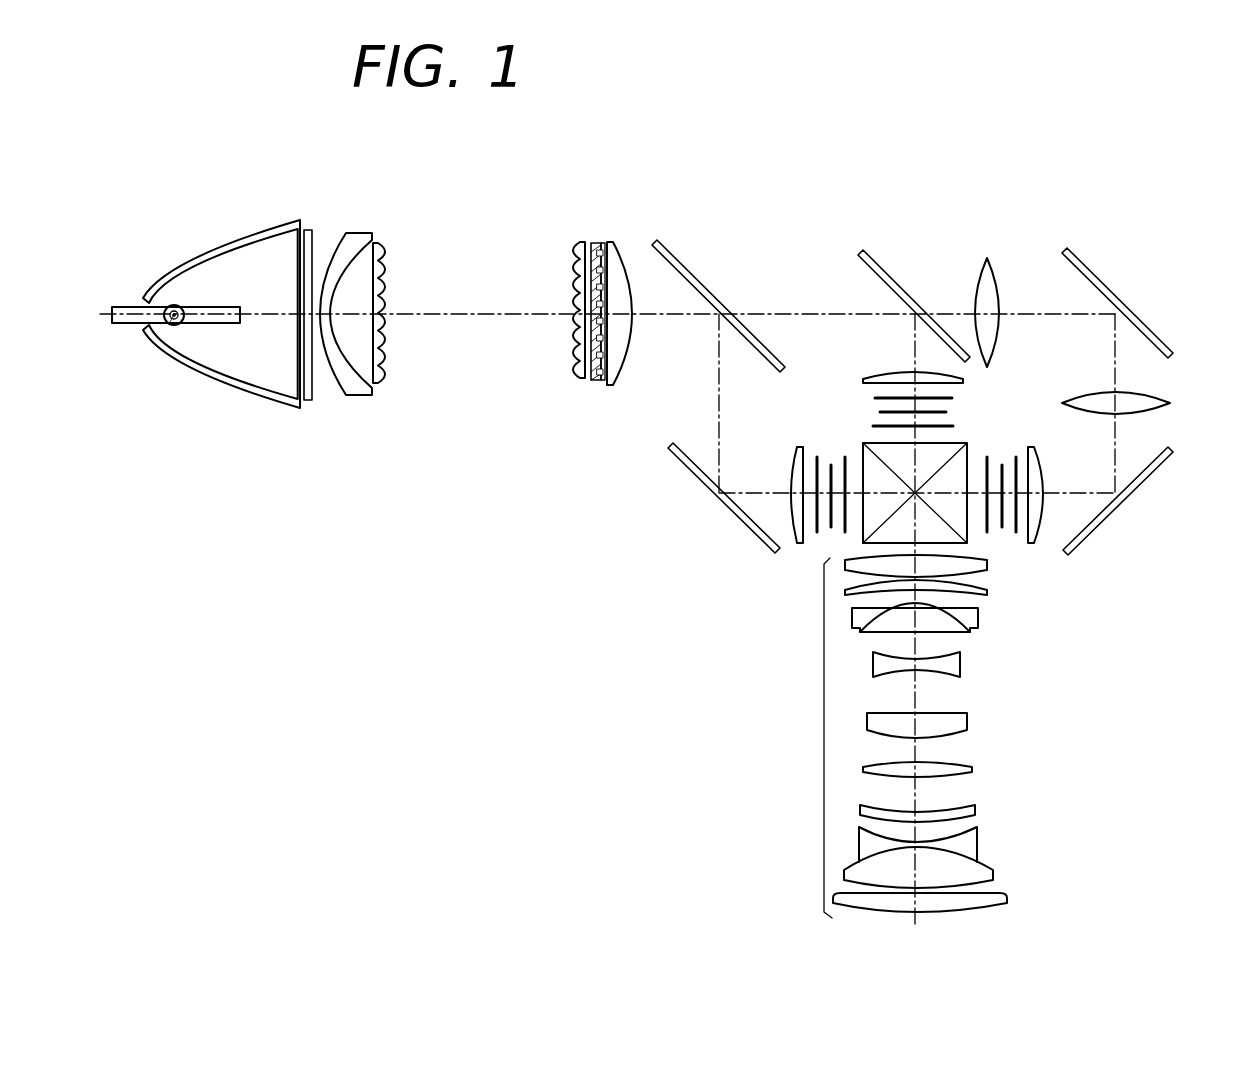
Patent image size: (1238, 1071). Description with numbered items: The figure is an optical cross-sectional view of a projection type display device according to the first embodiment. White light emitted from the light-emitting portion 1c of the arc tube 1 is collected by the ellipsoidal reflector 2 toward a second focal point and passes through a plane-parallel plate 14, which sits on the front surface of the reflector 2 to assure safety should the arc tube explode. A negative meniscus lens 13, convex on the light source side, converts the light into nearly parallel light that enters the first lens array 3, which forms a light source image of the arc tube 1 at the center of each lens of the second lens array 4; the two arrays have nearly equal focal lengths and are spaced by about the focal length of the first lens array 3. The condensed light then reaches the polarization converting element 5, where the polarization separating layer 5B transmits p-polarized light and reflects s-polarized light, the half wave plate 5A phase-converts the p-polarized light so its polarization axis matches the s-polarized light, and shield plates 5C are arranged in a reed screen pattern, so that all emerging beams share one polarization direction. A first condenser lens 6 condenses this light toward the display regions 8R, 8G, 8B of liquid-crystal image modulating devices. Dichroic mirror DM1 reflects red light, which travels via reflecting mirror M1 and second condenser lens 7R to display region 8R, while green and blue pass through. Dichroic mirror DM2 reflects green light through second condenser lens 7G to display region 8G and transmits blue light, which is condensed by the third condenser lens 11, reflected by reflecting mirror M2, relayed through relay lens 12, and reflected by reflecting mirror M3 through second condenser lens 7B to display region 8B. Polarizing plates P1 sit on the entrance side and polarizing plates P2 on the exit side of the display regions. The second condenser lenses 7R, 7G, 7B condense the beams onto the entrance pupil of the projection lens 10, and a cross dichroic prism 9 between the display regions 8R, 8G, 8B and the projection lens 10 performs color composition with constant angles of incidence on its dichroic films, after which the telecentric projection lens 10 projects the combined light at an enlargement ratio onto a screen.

The arc tube 1 is at (178, 303).
The light-emitting portion 1c is at (178, 326).
The ellipsoidal reflector 2 is at (165, 262).
The first lens array 3 is at (379, 243).
The second lens array 4 is at (577, 243).
The polarization converting element 5 is at (604, 284).
The half wave plate 5A is at (607, 243).
The polarization separating layer 5B is at (593, 243).
The shield plates 5C is at (583, 383).
The first condenser lens 6 is at (620, 260).
The second condenser lens 7R is at (795, 455).
The second condenser lens 7G is at (883, 375).
The second condenser lens 7B is at (1042, 477).
The display region 8R is at (829, 465).
The display region 8G is at (945, 412).
The display region 8B is at (1003, 522).
The cross dichroic prism 9 is at (965, 458).
The projection lens 10 is at (824, 722).
The third condenser lens 11 is at (998, 280).
The relay lens 12 is at (1147, 393).
The negative meniscus lens 13 is at (355, 395).
The plane-parallel plate 14 is at (313, 402).
The dichroic mirror DM1 is at (695, 280).
The dichroic mirror DM2 is at (892, 287).
The reflecting mirror M1 is at (677, 463).
The reflecting mirror M2 is at (1098, 280).
The reflecting mirror M3 is at (1138, 482).
The polarizing plates P1 is at (955, 398).
The polarizing plates P2 is at (845, 455).